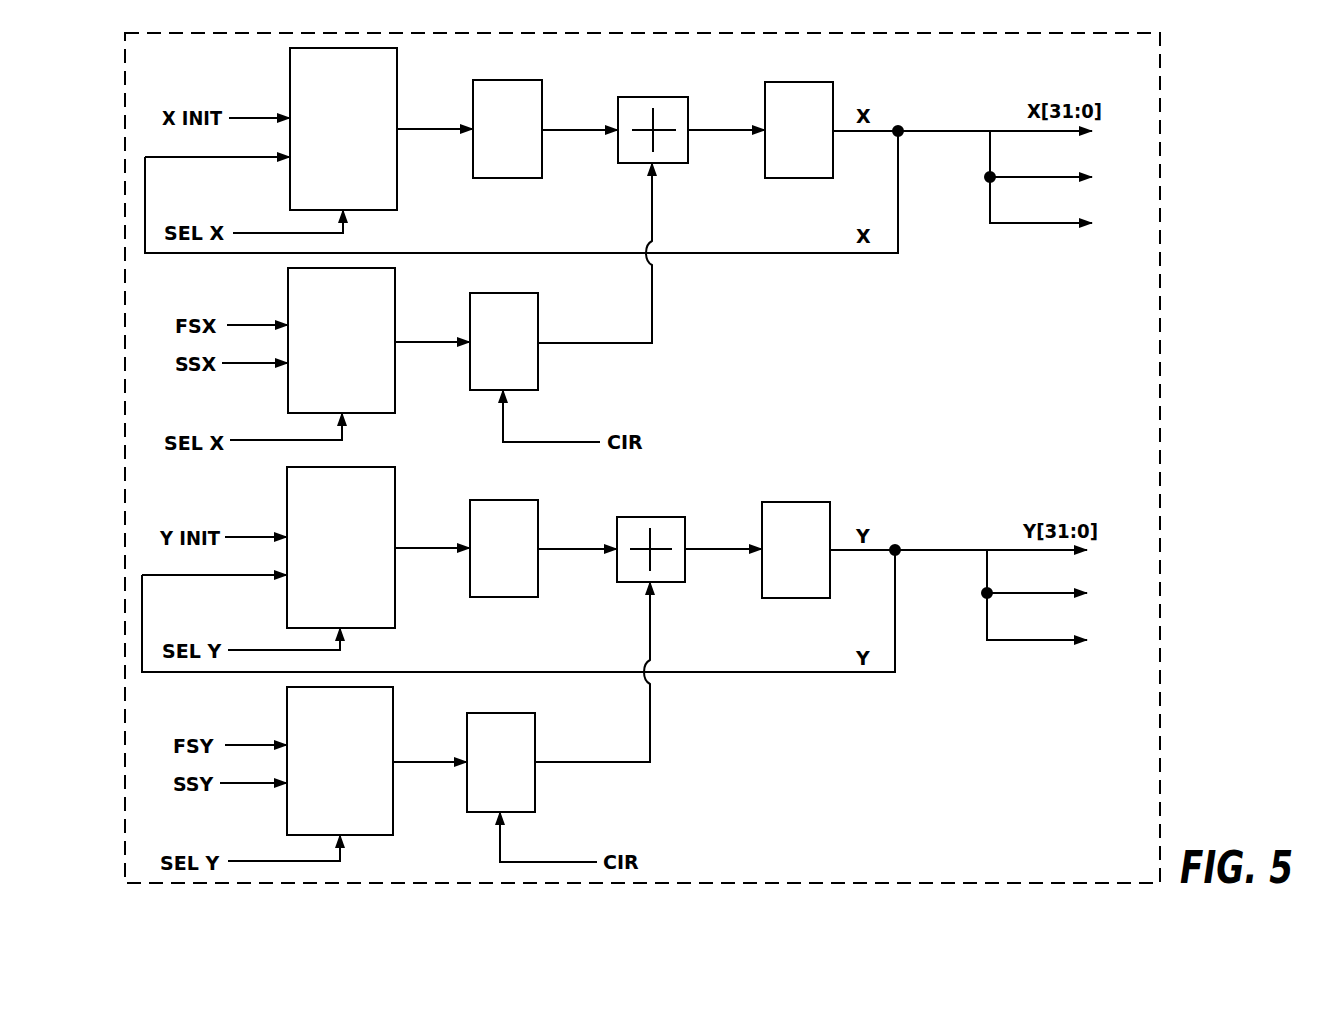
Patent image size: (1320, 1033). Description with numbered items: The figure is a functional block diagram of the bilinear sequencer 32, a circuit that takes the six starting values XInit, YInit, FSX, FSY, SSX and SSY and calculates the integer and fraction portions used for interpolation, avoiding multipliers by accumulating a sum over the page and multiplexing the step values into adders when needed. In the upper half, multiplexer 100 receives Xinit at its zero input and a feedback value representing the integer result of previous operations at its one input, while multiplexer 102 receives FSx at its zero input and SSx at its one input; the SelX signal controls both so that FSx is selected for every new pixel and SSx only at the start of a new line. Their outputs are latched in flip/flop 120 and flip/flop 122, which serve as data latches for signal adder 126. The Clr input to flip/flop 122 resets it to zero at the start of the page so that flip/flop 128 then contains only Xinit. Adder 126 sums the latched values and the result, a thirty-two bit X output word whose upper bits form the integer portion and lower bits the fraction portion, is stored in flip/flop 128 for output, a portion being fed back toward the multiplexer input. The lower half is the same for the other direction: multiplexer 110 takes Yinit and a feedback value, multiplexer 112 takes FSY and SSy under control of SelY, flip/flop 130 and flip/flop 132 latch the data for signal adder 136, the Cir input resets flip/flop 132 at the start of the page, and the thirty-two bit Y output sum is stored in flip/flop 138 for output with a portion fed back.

The bilinear sequencer 32 is at (123, 378).
The multiplexer 100 is at (290, 72).
The multiplexer 102 is at (395, 316).
The multiplexer 110 is at (395, 500).
The multiplexer 112 is at (393, 730).
The flip/flop 120 is at (505, 80).
The flip/flop 122 is at (503, 293).
The signal adder 126 is at (655, 97).
The flip/flop 128 is at (800, 82).
The flip/flop 130 is at (505, 500).
The flip/flop 132 is at (500, 713).
The signal adder 136 is at (652, 517).
The flip/flop 138 is at (797, 502).